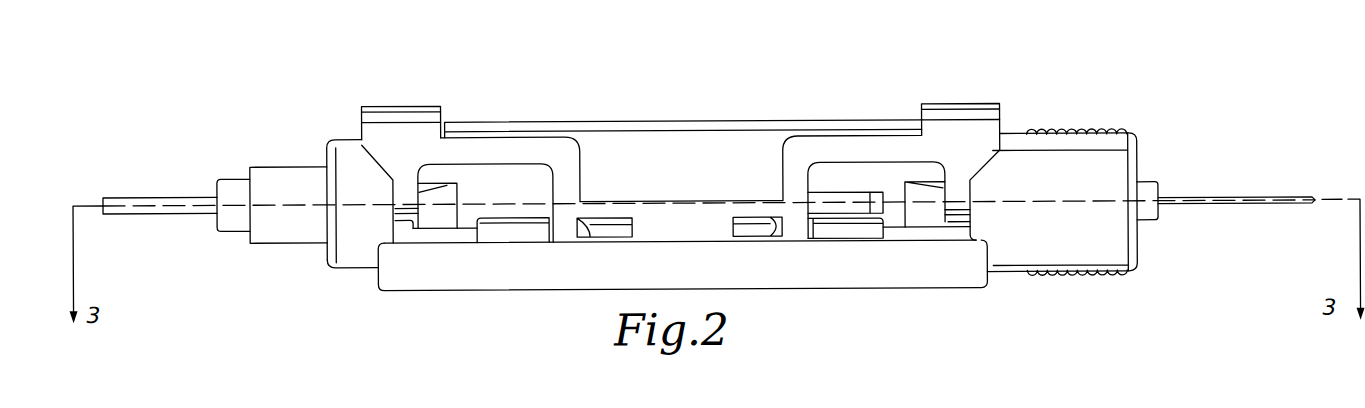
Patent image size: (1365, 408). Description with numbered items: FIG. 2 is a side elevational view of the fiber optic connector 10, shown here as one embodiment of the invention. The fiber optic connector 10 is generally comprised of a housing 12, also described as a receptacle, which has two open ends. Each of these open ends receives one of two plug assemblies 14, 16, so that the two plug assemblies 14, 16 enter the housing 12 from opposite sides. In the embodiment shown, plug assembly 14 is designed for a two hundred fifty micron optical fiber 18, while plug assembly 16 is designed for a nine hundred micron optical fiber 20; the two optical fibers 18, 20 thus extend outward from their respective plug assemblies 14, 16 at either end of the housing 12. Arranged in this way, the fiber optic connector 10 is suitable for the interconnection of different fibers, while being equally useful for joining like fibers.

The fiber optic connector 10 is at (1130, 72).
The housing 12 is at (742, 120).
The plug assembly 14 is at (1053, 130).
The plug assembly 16 is at (287, 158).
The optical fiber 18 is at (1227, 200).
The optical fiber 20 is at (177, 214).